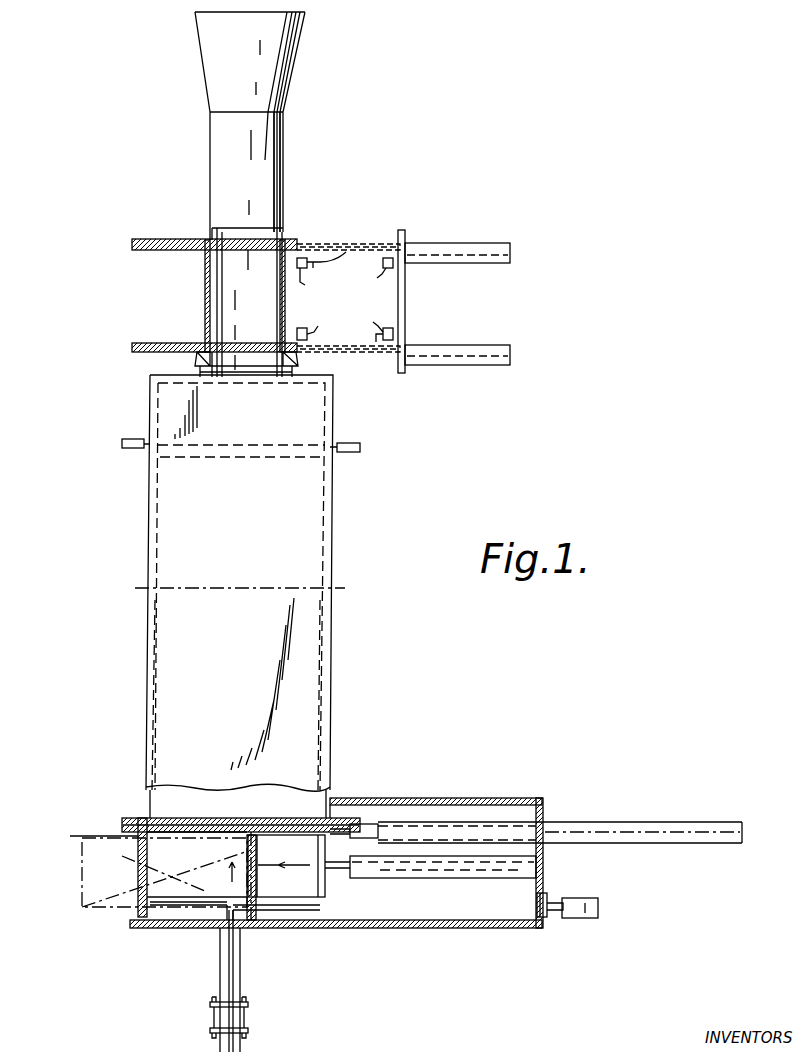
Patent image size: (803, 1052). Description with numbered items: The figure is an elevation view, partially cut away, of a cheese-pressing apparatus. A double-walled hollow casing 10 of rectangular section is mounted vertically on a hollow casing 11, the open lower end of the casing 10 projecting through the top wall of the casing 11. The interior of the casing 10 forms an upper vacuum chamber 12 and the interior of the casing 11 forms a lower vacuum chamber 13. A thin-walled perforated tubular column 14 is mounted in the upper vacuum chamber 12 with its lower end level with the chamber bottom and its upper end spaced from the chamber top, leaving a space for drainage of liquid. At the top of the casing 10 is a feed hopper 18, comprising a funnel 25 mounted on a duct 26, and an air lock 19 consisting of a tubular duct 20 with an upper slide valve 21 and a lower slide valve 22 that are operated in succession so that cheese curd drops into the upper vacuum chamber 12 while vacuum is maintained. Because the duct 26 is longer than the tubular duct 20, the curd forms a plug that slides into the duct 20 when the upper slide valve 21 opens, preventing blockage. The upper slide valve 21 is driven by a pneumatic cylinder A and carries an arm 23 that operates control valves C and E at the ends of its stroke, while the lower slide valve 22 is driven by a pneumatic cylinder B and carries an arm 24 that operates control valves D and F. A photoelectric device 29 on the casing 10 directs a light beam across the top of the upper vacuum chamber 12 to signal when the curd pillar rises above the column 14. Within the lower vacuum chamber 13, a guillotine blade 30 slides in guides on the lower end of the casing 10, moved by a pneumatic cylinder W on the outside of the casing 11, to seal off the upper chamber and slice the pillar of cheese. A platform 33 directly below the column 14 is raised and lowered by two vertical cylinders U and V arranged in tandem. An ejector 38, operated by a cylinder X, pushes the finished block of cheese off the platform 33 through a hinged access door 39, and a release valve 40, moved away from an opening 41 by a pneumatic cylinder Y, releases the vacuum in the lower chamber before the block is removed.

The double-walled hollow casing 10 is at (334, 538).
The hollow casing 11 is at (375, 800).
The upper vacuum chamber 12 is at (268, 792).
The lower vacuum chamber 13 is at (456, 805).
The tubular column 14 is at (325, 648).
The feed hopper 18 is at (200, 120).
The air lock 19 is at (186, 275).
The tubular duct 20 is at (205, 300).
The upper slide valve 21 is at (262, 246).
The lower slide valve 22 is at (338, 346).
The arm 23 is at (346, 252).
The arm 24 is at (380, 342).
The funnel 25 is at (272, 98).
The duct 26 is at (261, 175).
The photoelectric device 29 is at (362, 447).
The guillotine blade 30 is at (266, 822).
The platform 33 is at (177, 898).
The ejector 38 is at (333, 890).
The hinged access door 39 is at (130, 860).
The release valve 40 is at (548, 904).
The opening 41 is at (537, 905).
The pneumatic cylinder A is at (456, 249).
The pneumatic cylinder B is at (475, 350).
The control valve C is at (311, 282).
The control valve D is at (318, 318).
The control valve E is at (374, 281).
The control valve F is at (371, 317).
The vertical cylinder U is at (230, 962).
The vertical cylinder V is at (238, 1046).
The pneumatic cylinder W is at (590, 824).
The cylinder X is at (428, 870).
The pneumatic cylinder Y is at (585, 918).